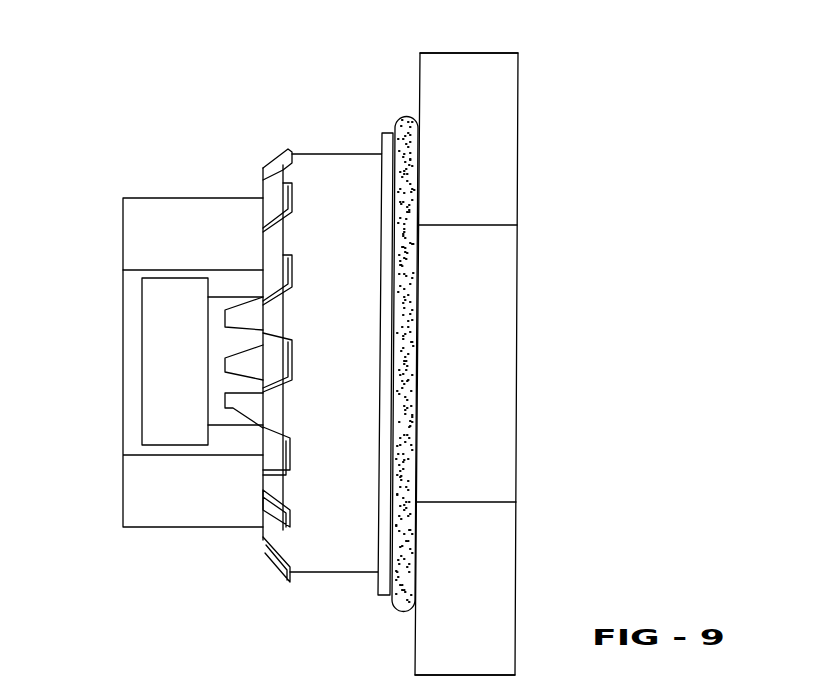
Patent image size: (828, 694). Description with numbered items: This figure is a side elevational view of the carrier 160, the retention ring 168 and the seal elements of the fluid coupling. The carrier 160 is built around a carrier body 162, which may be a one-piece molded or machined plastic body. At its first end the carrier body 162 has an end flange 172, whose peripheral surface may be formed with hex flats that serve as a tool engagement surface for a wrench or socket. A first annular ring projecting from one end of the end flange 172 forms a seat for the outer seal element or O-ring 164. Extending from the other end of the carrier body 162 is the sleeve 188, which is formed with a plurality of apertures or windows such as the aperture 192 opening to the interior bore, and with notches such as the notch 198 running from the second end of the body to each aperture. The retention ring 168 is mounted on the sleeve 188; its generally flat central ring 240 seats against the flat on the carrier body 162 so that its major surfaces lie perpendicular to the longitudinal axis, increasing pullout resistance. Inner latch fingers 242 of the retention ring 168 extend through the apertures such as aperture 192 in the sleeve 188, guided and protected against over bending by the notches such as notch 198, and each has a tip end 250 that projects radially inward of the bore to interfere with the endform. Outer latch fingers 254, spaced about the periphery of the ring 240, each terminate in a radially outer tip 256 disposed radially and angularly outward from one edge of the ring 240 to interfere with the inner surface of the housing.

The carrier 160 is at (607, 152).
The carrier body 162 is at (517, 581).
The outer seal element or O-ring 164 is at (405, 117).
The retention ring 168 is at (274, 341).
The end flange 172 is at (498, 53).
The sleeve 188 is at (140, 517).
The aperture or window 192 is at (218, 322).
The notch 198 is at (150, 280).
The central ring 240 is at (230, 198).
The inner latch finger 242 is at (233, 412).
The tip end 250 is at (223, 360).
The outer latch finger 254 is at (270, 520).
The radially outer tip 256 is at (288, 522).